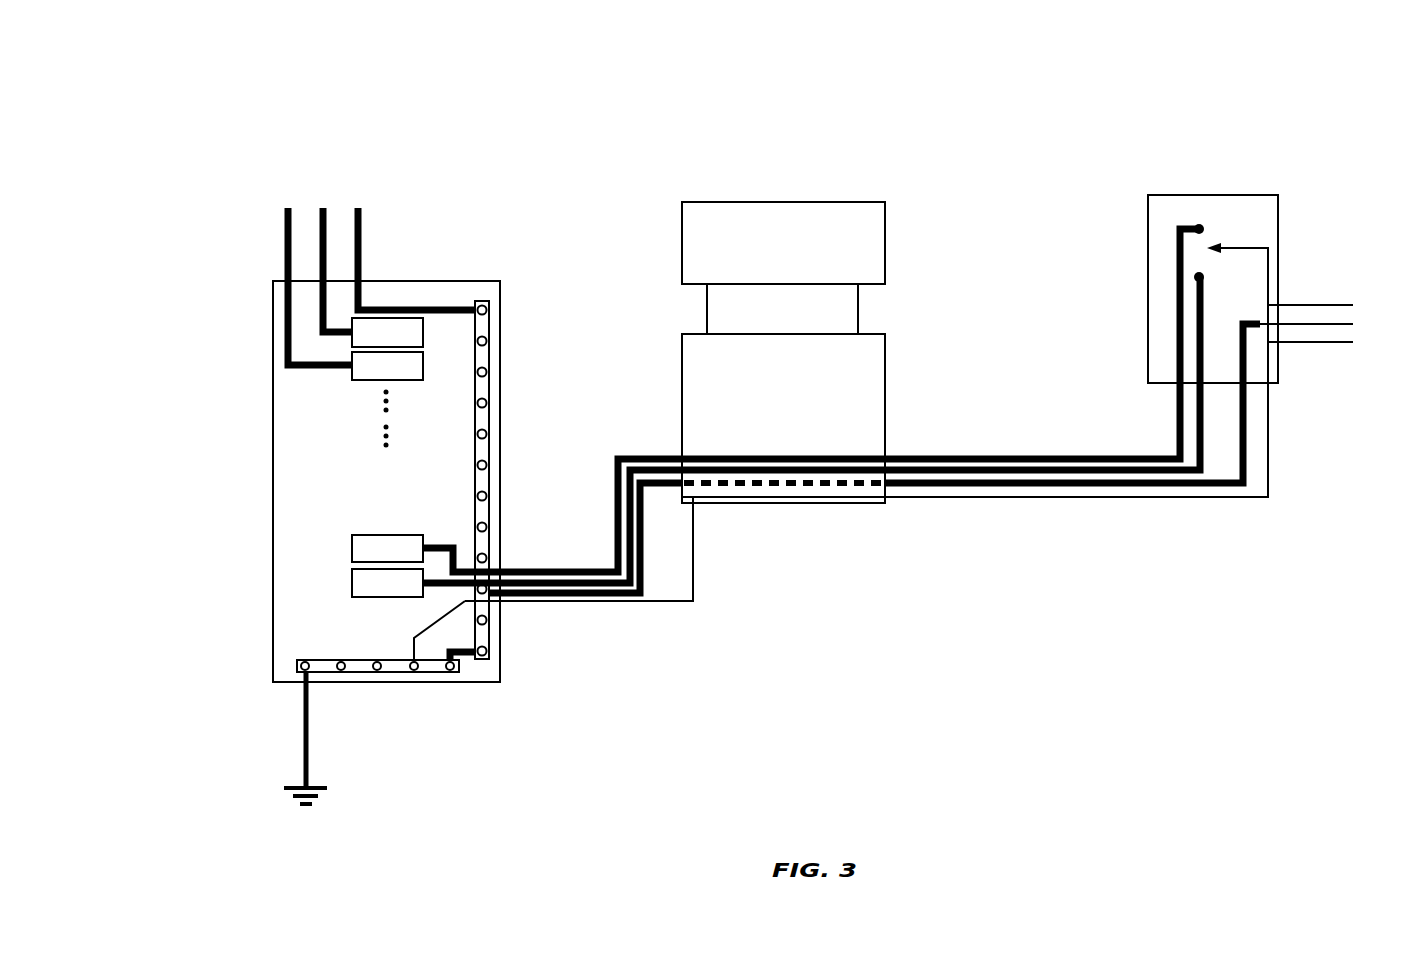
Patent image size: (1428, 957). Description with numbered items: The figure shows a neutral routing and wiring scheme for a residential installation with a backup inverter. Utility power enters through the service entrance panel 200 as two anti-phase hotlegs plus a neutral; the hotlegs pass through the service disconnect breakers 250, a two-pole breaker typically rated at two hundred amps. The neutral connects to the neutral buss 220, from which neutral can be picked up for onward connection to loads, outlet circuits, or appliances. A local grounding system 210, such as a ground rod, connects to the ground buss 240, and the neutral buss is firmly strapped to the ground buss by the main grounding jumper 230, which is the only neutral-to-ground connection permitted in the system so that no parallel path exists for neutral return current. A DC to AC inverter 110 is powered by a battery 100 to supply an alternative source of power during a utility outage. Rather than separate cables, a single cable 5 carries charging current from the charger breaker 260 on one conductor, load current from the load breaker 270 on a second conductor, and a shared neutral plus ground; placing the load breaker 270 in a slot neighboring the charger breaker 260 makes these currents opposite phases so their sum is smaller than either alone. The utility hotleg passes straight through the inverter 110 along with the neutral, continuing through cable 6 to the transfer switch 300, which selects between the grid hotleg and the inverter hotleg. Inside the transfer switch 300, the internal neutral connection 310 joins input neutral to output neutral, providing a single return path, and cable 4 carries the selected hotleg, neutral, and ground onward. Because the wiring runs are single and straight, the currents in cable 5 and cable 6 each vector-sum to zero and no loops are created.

The battery 100 is at (768, 264).
The DC to AC inverter 110 is at (768, 409).
The service entrance panel 200 is at (512, 628).
The local grounding system 210 is at (345, 793).
The neutral buss 220 is at (483, 300).
The main grounding jumper 230 is at (465, 657).
The ground buss 240 is at (405, 683).
The service disconnect breakers 250 is at (378, 328).
The charger breaker 260 is at (343, 583).
The load breaker 270 is at (338, 478).
The transfer switch 300 is at (1274, 190).
The internal N-N' connection 310 is at (1164, 236).
The cable 4 is at (1324, 358).
The cable 5 is at (546, 568).
The cable 6 is at (1022, 444).